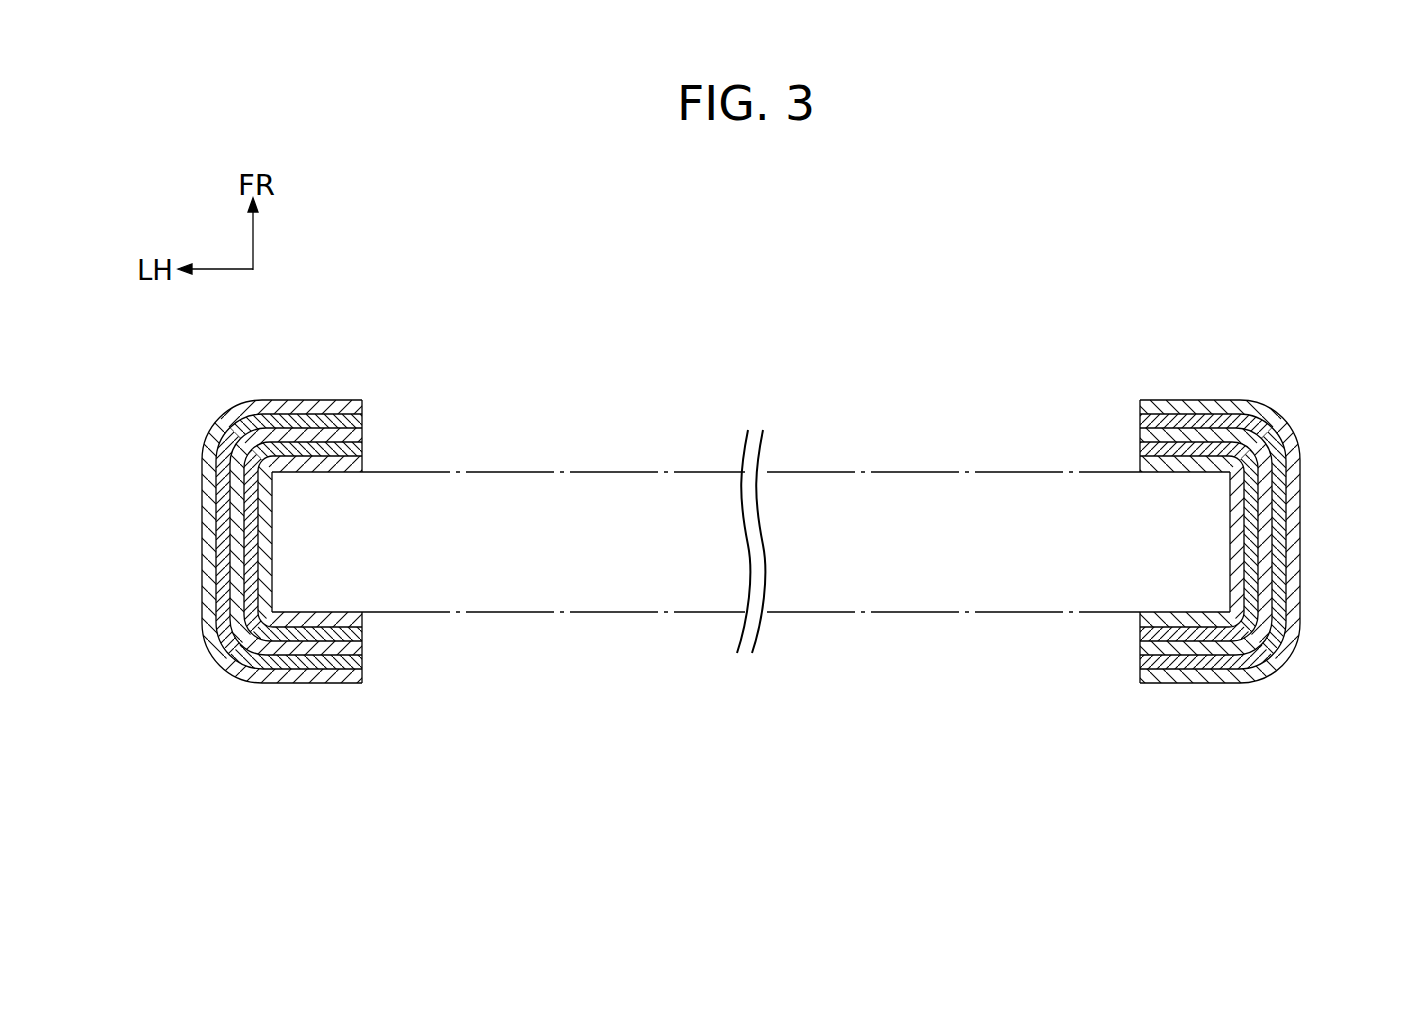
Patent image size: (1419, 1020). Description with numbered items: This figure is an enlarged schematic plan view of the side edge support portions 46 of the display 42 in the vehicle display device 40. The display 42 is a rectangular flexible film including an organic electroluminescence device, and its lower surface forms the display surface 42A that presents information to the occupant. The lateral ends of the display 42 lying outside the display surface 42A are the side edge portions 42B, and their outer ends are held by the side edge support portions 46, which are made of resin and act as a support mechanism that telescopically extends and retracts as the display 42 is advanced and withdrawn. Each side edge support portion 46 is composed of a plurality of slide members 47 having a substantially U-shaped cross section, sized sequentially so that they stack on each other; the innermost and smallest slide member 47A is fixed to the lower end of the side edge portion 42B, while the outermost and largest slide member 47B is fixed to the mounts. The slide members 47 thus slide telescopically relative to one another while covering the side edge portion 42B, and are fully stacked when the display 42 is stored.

The vehicle display device 40 is at (1015, 388).
The display 42 is at (823, 472).
The display surface 42A is at (582, 613).
The side edge portions 42B is at (280, 550).
The side edge support portions 46 is at (188, 540).
The slide members 47 is at (310, 400).
The innermost slide member 47A is at (365, 463).
The outermost slide member 47B is at (365, 685).